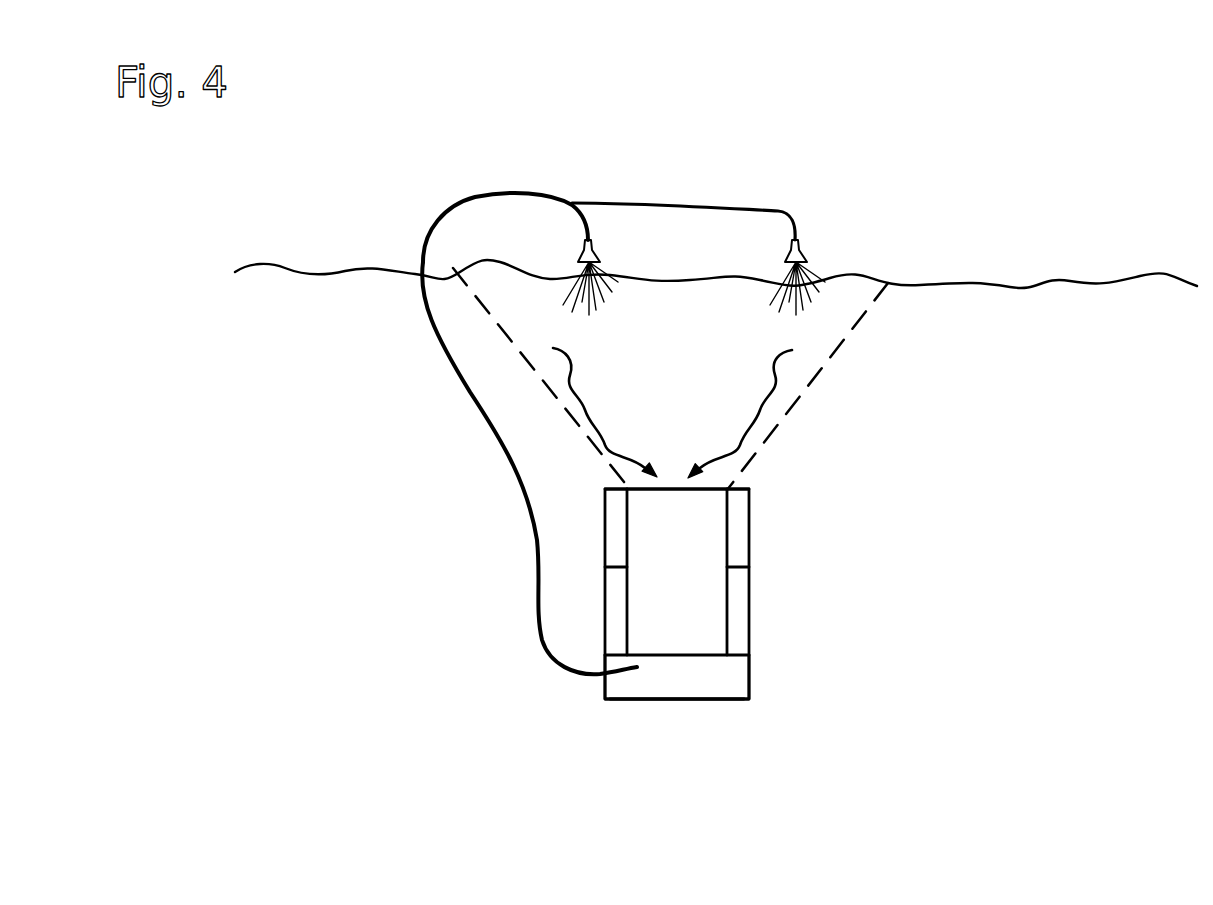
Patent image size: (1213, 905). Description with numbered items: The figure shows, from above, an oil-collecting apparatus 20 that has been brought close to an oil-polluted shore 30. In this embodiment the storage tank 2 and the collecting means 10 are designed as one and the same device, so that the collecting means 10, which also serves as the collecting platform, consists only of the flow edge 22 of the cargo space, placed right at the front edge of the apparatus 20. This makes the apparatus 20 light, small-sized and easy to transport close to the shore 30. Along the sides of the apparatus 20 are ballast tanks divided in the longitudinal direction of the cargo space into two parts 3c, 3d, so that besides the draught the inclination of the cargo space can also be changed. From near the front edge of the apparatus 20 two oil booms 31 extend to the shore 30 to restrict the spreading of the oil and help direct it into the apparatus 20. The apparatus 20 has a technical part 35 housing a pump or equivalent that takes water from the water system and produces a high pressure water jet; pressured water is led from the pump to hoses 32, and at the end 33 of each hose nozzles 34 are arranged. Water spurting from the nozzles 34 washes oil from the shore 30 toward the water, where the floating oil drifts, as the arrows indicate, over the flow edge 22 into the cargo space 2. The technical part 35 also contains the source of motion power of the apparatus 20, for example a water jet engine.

The storage tank 2 is at (703, 527).
The ballast tank part 3c is at (617, 527).
The ballast tank part 3d is at (617, 605).
The collecting means 10 is at (764, 481).
The apparatus 20 is at (782, 673).
The flow edge 22 is at (655, 488).
The shore 30 is at (975, 254).
The oil boom 31 is at (503, 334).
The hose 32 is at (470, 392).
The hose end 33 is at (570, 236).
The nozzle 34 is at (787, 247).
The technical part 35 is at (696, 678).